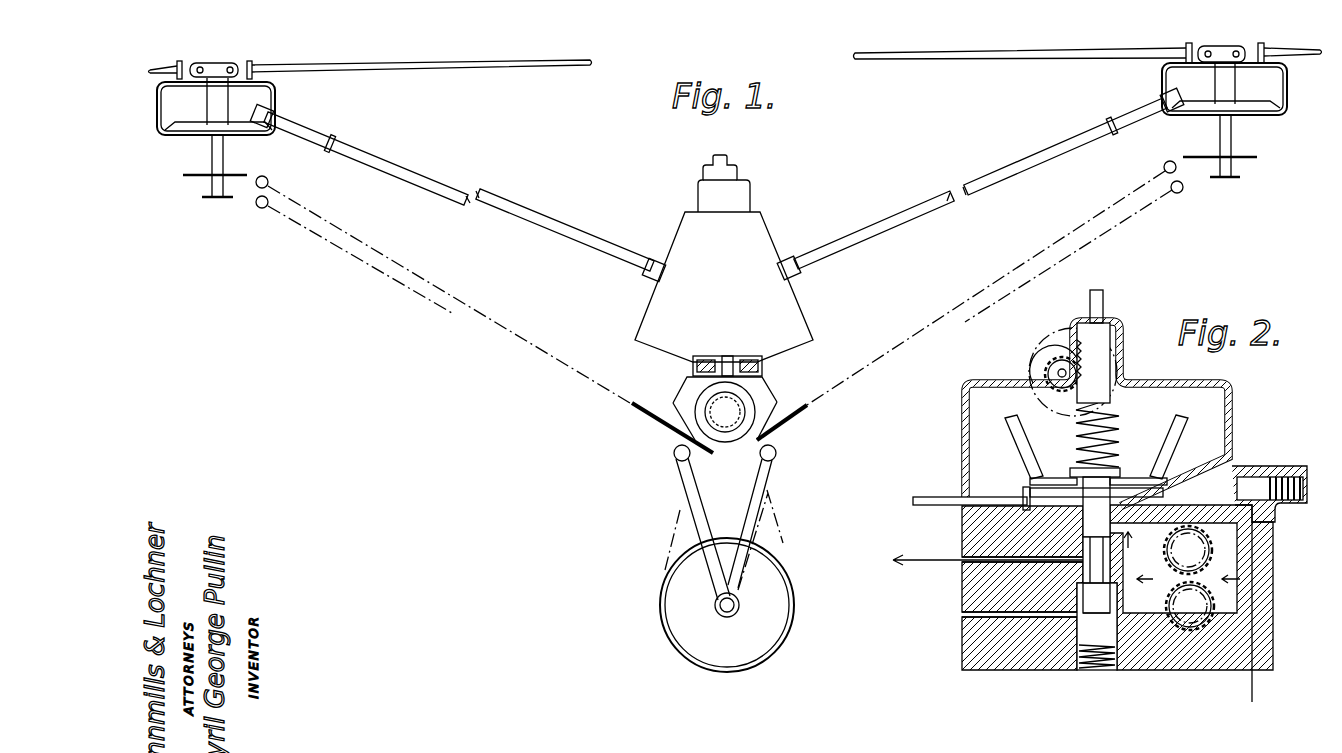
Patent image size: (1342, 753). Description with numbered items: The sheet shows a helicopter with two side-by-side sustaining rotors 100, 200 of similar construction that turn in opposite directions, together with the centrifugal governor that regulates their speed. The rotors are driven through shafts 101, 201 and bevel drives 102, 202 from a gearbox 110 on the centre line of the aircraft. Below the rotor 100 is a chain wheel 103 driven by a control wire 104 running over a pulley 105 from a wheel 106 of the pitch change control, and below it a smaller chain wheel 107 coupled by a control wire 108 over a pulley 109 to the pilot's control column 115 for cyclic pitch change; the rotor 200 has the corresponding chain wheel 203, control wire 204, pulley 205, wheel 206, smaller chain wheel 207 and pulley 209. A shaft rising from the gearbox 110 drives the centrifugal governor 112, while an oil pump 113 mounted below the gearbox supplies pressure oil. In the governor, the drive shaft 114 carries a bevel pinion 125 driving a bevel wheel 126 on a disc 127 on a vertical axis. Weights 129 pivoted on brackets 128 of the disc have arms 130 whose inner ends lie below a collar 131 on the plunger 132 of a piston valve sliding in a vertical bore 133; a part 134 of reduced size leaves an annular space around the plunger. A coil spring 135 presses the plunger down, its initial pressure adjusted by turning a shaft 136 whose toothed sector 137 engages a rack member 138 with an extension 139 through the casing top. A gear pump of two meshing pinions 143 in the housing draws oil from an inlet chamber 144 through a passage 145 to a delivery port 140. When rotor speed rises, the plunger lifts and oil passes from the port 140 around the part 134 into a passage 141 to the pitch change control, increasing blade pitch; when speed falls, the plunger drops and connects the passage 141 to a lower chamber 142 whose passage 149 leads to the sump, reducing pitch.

In FIG. 1, the rotor 100 is at (253, 74).
In FIG. 1, the rotor drive shaft 101 is at (500, 206).
In FIG. 1, the bevel drive 102 is at (192, 127).
In FIG. 1, the chain wheel 103 is at (243, 177).
In FIG. 1, the control wire 104 is at (363, 235).
In FIG. 1, the pulley 105 is at (270, 181).
In FIG. 1, the wheel 106 is at (647, 413).
In FIG. 1, the smaller chain wheel 107 is at (203, 197).
In FIG. 1, the control wire 108 is at (377, 270).
In FIG. 1, the pulley 109 is at (262, 208).
In FIG. 1, the gearbox 110 is at (760, 222).
In FIG. 1, the centrifugal governor 112 is at (707, 197).
In FIG. 2, the centrifugal governor 112 is at (962, 418).
In FIG. 1, the oil pump 113 is at (760, 362).
In FIG. 2, the drive shaft 114 is at (933, 498).
In FIG. 1, the control column 115 is at (683, 480).
In FIG. 2, the bevel pinion 125 is at (1027, 493).
In FIG. 2, the bevel wheel 126 is at (1033, 480).
In FIG. 2, the disc 127 is at (1243, 507).
In FIG. 2, the bracket 128 is at (1177, 480).
In FIG. 2, the weight 129 is at (1180, 420).
In FIG. 2, the arm 130 is at (1170, 478).
In FIG. 2, the collar 131 is at (1183, 425).
In FIG. 2, the plunger 132 is at (1097, 517).
In FIG. 2, the vertical bore 133 is at (1083, 575).
In FIG. 2, the part of reduced size 134 is at (1093, 552).
In FIG. 2, the coil spring 135 is at (1117, 423).
In FIG. 2, the shaft 136 is at (1110, 375).
In FIG. 2, the toothed sector 137 is at (1072, 387).
In FIG. 2, the rack member 138 is at (1088, 357).
In FIG. 2, the extension 139 is at (1103, 303).
In FIG. 2, the delivery port 140 is at (1123, 530).
In FIG. 2, the passage 141 is at (1082, 558).
In FIG. 2, the lower chamber 142 is at (1095, 648).
In FIG. 2, the pinion 143 is at (1193, 550).
In FIG. 2, the inlet chamber 144 is at (1227, 593).
In FIG. 2, the passage 145 is at (1252, 643).
In FIG. 2, the passage 149 is at (970, 615).
In FIG. 1, the rotor 200 is at (1187, 61).
In FIG. 1, the rotor drive shaft 201 is at (973, 192).
In FIG. 1, the bevel drive 202 is at (1245, 105).
In FIG. 1, the chain wheel 203 is at (1200, 157).
In FIG. 1, the control wire 204 is at (1047, 243).
In FIG. 1, the pulley 205 is at (1164, 165).
In FIG. 1, the wheel 206 is at (800, 417).
In FIG. 1, the smaller chain wheel 207 is at (1232, 178).
In FIG. 1, the pulley 209 is at (1177, 193).